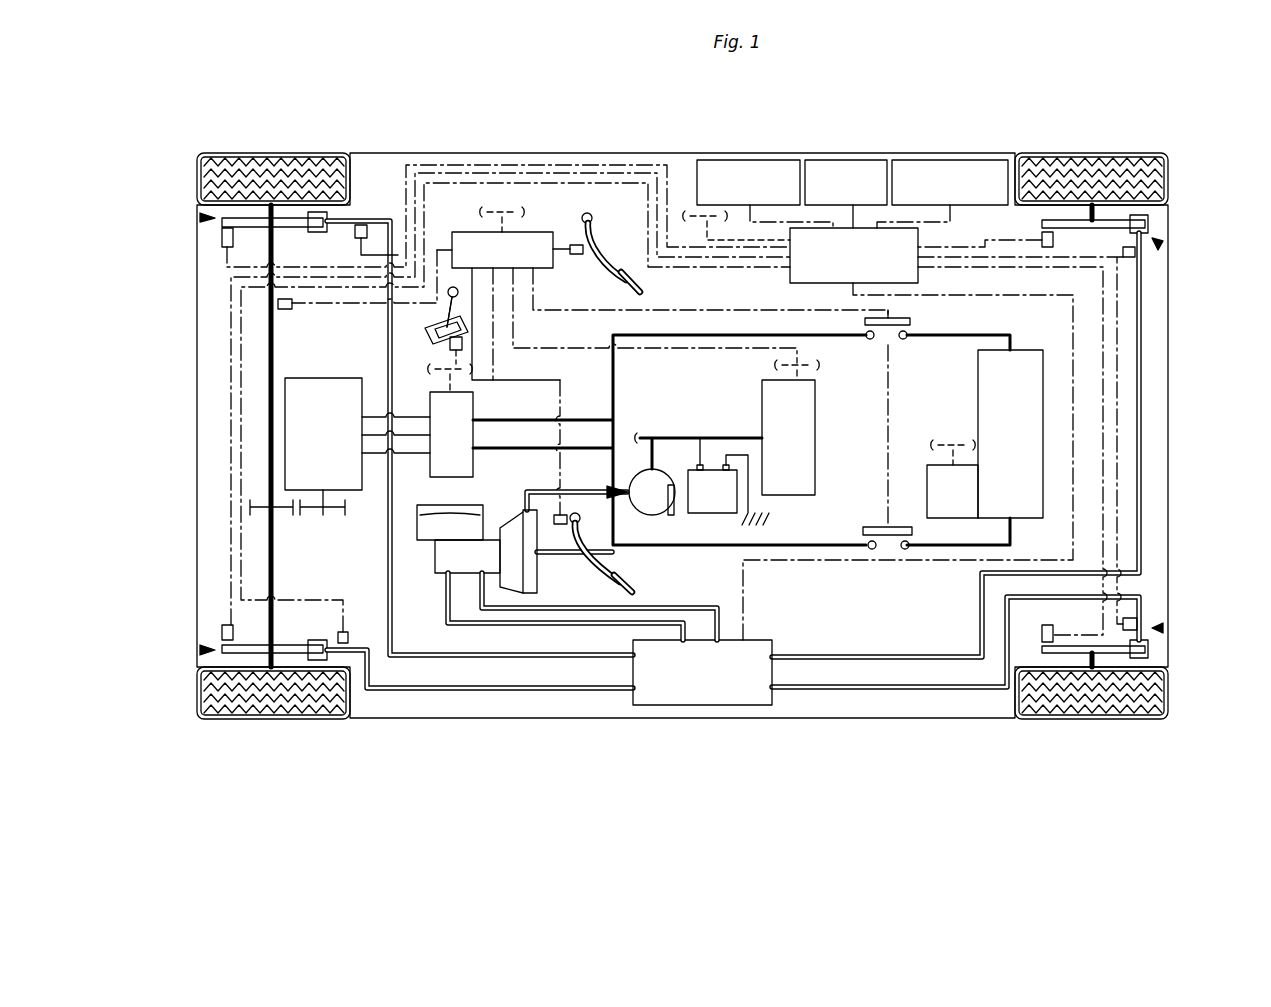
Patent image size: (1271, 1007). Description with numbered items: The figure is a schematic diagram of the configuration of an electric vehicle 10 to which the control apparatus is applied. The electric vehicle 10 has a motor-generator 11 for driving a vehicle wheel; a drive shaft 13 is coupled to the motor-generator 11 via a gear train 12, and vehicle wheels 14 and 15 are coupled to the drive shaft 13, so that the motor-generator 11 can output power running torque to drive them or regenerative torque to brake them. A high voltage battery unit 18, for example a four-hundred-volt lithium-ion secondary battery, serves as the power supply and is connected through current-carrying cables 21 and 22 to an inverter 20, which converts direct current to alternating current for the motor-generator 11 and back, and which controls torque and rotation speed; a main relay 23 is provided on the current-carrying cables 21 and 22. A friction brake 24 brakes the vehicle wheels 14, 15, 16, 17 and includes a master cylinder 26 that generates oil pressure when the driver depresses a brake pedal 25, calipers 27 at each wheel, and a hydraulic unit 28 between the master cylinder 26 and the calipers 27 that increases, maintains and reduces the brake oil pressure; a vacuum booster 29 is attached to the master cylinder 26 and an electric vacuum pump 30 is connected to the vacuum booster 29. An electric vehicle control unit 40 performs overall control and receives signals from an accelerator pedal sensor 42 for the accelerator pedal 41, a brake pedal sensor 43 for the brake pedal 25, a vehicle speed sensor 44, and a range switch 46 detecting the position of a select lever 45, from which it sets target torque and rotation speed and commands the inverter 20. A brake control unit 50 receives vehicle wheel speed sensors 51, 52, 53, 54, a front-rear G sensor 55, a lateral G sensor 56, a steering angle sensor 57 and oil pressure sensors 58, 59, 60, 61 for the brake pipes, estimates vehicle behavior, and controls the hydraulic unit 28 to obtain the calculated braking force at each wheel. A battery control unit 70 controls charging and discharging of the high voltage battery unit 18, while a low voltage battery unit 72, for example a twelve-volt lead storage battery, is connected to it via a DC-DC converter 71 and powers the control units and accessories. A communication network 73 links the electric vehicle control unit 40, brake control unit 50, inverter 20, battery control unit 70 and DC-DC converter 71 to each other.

The electric vehicle 10 is at (985, 108).
The motor-generator 11 is at (325, 378).
The gear train 12 is at (307, 525).
The drive shaft 13 is at (276, 578).
The vehicle wheel 14 is at (268, 170).
The vehicle wheel 15 is at (275, 692).
The vehicle wheel 16 is at (1112, 170).
The vehicle wheel 17 is at (1110, 700).
The high voltage battery unit 18 is at (1020, 348).
The inverter 20 is at (478, 405).
The current-carrying cable 21 is at (617, 355).
The current-carrying cable 22 is at (692, 548).
The main relay 23 is at (912, 322).
The friction brake 24 is at (198, 218).
The brake pedal 25 is at (622, 592).
The master cylinder 26 is at (495, 505).
The caliper 27 is at (325, 212).
The hydraulic unit 28 is at (703, 705).
The vacuum booster 29 is at (538, 583).
The electric vacuum pump 30 is at (652, 518).
The electric vehicle control unit 40 is at (455, 232).
The accelerator pedal 41 is at (623, 262).
The accelerator pedal sensor 42 is at (575, 243).
The brake pedal sensor 43 is at (562, 525).
The vehicle speed sensor 44 is at (285, 310).
The select lever 45 is at (425, 322).
The range switch 46 is at (450, 343).
The brake control unit 50 is at (920, 240).
The vehicle wheel speed sensor 51 is at (221, 238).
The vehicle wheel speed sensor 52 is at (221, 632).
The vehicle wheel speed sensor 53 is at (1053, 240).
The vehicle wheel speed sensor 54 is at (1053, 632).
The front-rear G sensor 55 is at (752, 160).
The lateral G sensor 56 is at (853, 160).
The steering angle sensor 57 is at (950, 160).
The oil pressure sensor 58 is at (365, 225).
The oil pressure sensor 59 is at (346, 645).
The oil pressure sensor 60 is at (1130, 258).
The oil pressure sensor 61 is at (1137, 622).
The battery control unit 70 is at (957, 520).
The DC-DC converter 71 is at (760, 400).
The low voltage battery unit 72 is at (713, 513).
The communication network 73 is at (493, 207).